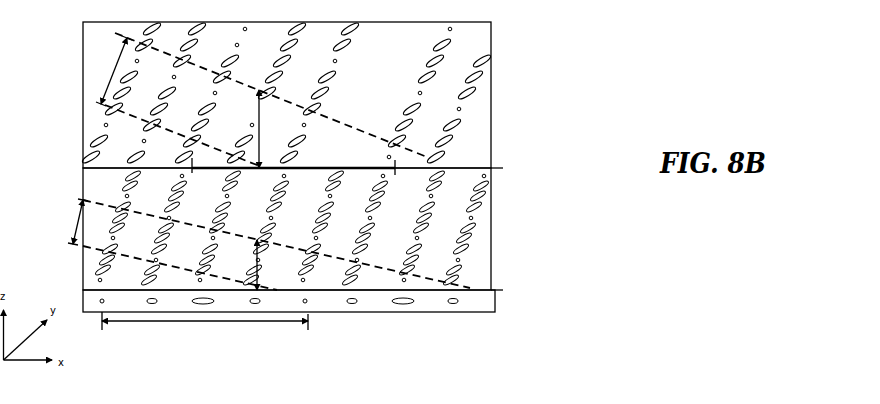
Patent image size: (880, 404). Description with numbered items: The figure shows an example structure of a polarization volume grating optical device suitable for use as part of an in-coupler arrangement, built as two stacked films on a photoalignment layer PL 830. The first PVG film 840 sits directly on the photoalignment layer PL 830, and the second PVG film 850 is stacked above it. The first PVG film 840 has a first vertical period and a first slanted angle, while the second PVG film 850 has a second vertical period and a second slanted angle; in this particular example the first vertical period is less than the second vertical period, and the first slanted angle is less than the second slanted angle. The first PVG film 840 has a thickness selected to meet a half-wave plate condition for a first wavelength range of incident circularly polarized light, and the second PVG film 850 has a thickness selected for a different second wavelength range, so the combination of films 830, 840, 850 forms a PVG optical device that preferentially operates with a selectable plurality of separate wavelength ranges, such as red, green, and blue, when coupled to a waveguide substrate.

The second PVG film 850 is at (480, 125).
The first PVG film 840 is at (492, 235).
The photoalignment layer PL 830 is at (497, 305).